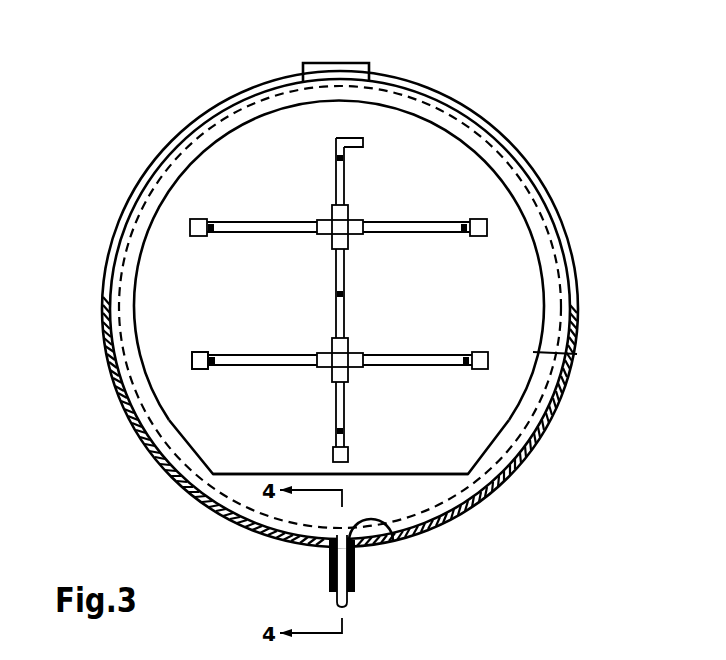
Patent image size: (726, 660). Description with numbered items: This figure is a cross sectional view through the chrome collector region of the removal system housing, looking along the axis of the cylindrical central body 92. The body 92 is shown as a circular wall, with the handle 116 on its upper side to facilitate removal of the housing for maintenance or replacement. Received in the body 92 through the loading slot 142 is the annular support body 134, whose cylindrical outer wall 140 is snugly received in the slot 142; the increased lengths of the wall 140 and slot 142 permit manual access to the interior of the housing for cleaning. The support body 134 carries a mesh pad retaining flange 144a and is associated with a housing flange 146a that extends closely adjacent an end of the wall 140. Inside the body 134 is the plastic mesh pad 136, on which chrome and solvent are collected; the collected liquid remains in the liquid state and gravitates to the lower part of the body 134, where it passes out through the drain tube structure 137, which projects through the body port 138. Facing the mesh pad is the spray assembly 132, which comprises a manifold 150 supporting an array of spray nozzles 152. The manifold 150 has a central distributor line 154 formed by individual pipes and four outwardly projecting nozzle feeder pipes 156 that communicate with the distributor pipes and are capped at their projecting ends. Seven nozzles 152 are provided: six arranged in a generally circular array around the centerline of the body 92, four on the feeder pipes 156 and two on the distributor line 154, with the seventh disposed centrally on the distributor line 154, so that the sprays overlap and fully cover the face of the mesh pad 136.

The cylindrical central body 92 is at (121, 207).
The handle 116 is at (340, 62).
The assembly 132 is at (185, 378).
The annular support body 134 is at (180, 141).
The plastic mesh pad 136 is at (465, 172).
The drain tube structure 137 is at (350, 602).
The body port 138 is at (398, 541).
The cylindrical outer wall 140 is at (415, 100).
The loading slot 142 is at (106, 266).
The mesh pad retaining flange 144a is at (403, 492).
The housing flange 146a is at (228, 484).
The manifold 150 is at (484, 297).
The spray nozzles 152 is at (463, 220).
The central distributor line 154 is at (336, 192).
The nozzle feeder pipes 156 is at (393, 233).